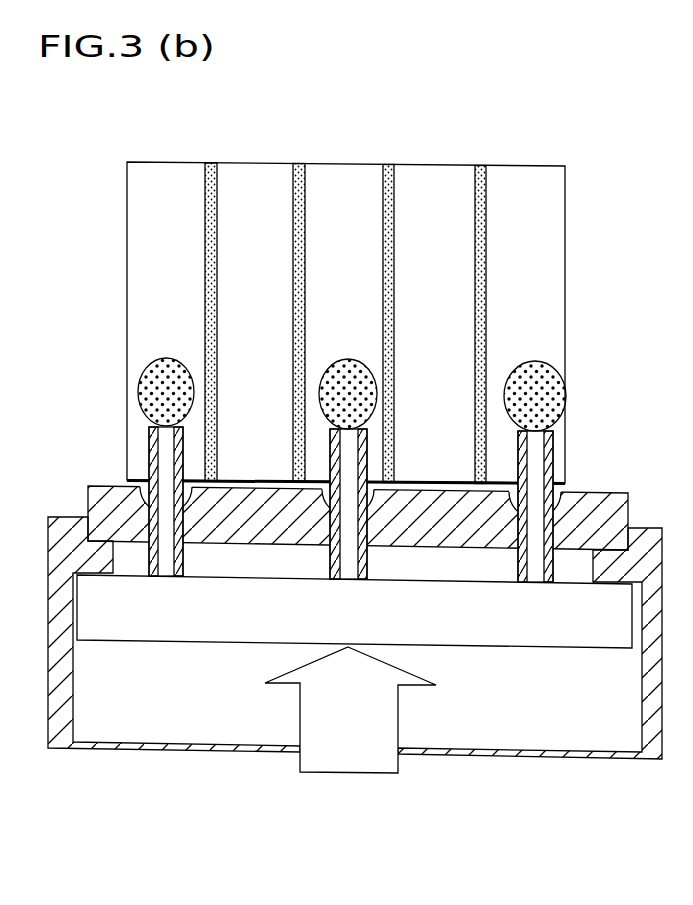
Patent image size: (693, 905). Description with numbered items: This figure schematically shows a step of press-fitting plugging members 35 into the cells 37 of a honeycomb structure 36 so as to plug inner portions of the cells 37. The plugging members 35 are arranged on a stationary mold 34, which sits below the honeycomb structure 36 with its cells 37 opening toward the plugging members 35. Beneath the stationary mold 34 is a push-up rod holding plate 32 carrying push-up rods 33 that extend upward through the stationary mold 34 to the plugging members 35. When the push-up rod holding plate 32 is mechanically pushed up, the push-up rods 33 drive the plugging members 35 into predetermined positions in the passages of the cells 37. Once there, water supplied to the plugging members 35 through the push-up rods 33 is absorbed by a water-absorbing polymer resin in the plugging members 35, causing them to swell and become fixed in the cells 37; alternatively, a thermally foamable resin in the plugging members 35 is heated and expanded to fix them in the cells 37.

The push-up rod holding plate 32 is at (510, 637).
The push-up rod 33 is at (552, 458).
The stationary mold 34 is at (582, 511).
The plugging member 35 is at (556, 389).
The honeycomb structure 36 is at (566, 283).
The cell 37 is at (537, 223).